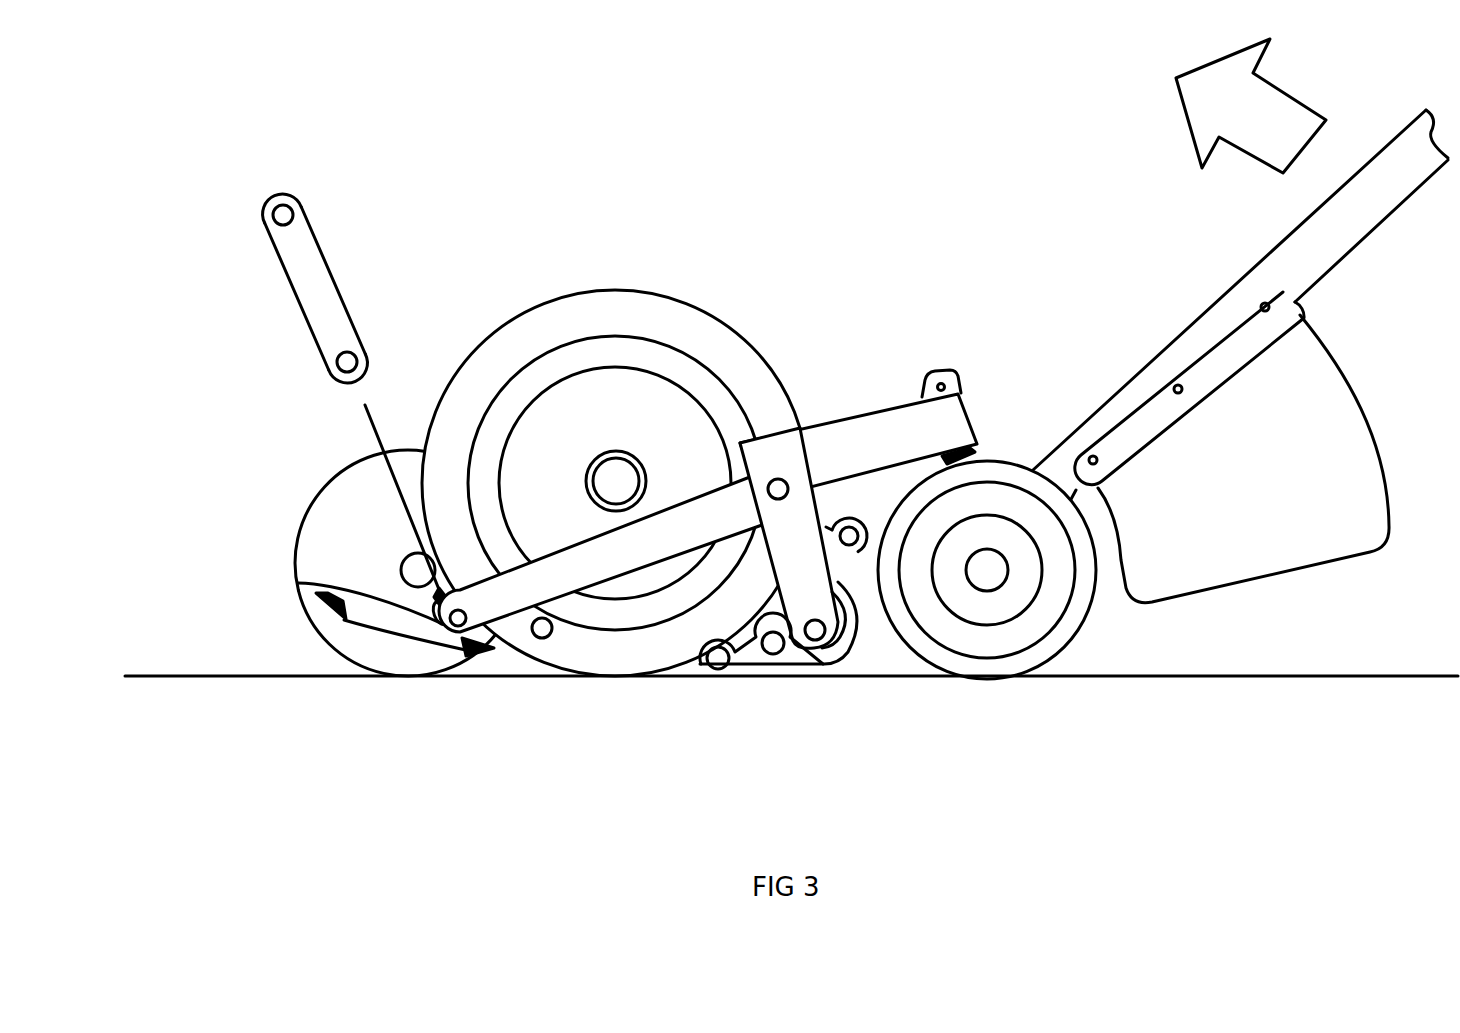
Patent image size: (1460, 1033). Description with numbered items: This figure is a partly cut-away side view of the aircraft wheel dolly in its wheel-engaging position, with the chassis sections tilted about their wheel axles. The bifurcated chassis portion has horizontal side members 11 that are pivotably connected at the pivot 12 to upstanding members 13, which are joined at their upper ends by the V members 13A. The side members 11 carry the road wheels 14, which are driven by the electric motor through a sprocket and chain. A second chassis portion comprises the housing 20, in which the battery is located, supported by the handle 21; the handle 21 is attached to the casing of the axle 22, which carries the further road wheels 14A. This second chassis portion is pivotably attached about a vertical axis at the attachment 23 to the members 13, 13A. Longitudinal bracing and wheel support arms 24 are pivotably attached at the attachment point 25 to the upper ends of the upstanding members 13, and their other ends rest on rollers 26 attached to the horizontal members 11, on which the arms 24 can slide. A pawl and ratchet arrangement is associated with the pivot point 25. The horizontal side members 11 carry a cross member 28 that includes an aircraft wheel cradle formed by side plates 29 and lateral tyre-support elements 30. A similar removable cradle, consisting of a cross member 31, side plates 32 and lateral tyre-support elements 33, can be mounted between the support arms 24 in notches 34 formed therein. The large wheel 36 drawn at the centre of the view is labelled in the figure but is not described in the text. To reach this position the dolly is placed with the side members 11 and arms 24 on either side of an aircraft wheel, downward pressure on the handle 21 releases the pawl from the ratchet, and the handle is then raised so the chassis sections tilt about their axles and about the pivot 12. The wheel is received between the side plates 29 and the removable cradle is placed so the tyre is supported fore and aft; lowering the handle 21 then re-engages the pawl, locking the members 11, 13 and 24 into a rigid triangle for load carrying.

The horizontal side members 11 is at (330, 510).
The pivotable connection 12 is at (815, 641).
The upstanding members 13 is at (808, 570).
The V members 13A is at (862, 437).
The road wheels 14 is at (386, 655).
The road wheels 14A is at (1005, 636).
The housing 20 is at (1312, 489).
The handle 21 is at (1331, 247).
The axle 22 is at (992, 563).
The pivotable attachment 23 is at (925, 372).
The bracing/wheel support arms 24 is at (592, 567).
The pivotable attachment point 25 is at (780, 484).
The rollers 26 is at (540, 642).
The cross member 28 is at (783, 660).
The side plates 29 is at (751, 646).
The lateral tyre-support elements 30 is at (712, 662).
The cross member 31 is at (340, 348).
The side plates 32 is at (320, 282).
The lateral tyre-support elements 33 is at (283, 222).
The notches 34 is at (300, 588).
The wheel rim 36 is at (600, 313).